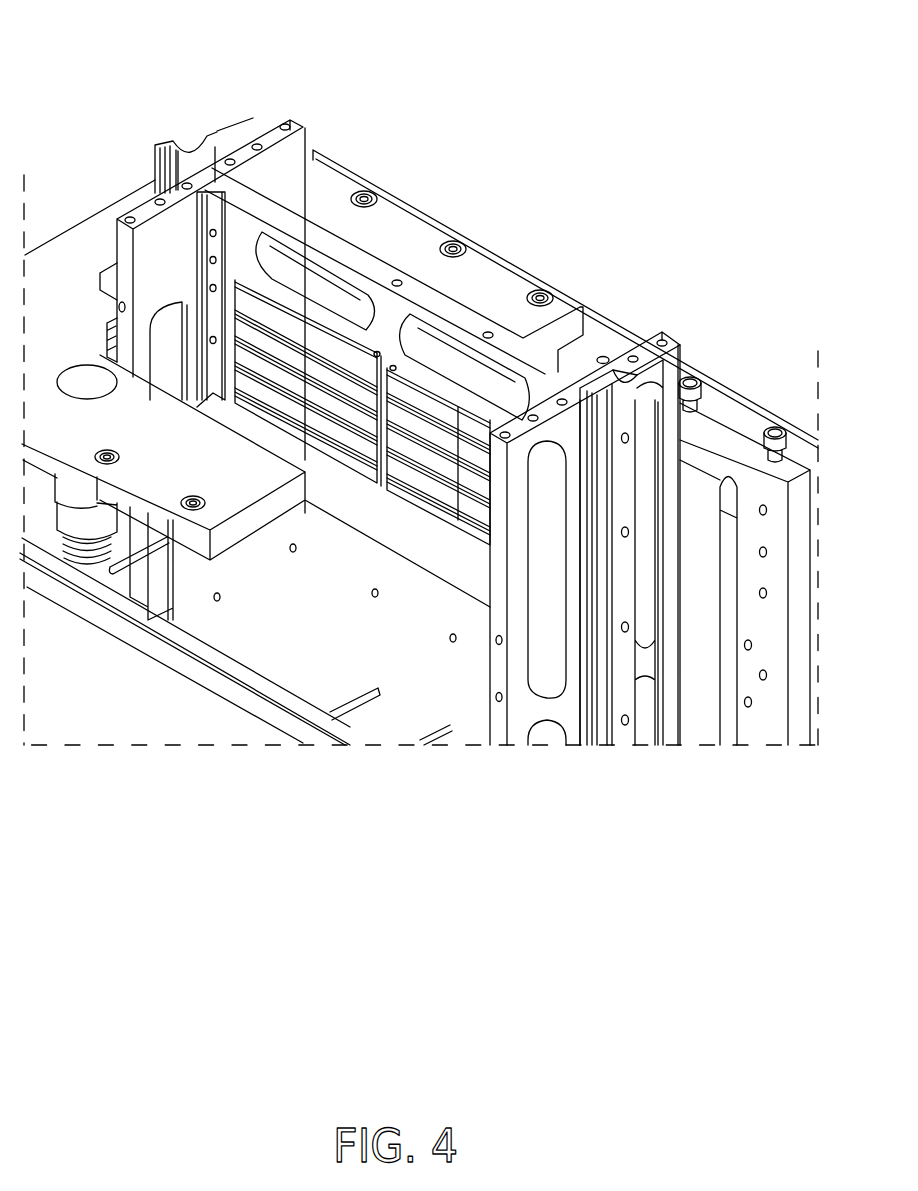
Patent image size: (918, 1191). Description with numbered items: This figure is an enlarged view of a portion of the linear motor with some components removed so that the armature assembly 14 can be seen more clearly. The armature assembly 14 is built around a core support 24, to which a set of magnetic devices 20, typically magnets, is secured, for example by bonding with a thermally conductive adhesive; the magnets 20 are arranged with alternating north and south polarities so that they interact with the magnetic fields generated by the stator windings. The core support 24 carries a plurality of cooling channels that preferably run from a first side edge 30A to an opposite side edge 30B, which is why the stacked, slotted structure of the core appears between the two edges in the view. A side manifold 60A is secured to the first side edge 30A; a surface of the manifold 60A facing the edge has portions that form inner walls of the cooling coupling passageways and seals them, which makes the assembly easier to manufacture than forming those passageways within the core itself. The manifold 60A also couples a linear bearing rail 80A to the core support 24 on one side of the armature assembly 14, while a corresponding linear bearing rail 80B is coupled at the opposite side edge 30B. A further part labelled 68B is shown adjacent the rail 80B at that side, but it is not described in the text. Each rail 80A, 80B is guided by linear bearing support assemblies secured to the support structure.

The armature assembly 14 is at (480, 303).
The magnetic devices 20 is at (435, 410).
The core support 24 is at (427, 298).
The first side edge 30A is at (605, 356).
The opposite side edge 30B is at (303, 133).
The side manifold 60A is at (650, 380).
The second support post 68B is at (290, 118).
The linear bearing rail 80A is at (633, 413).
The linear bearing rail 80B is at (177, 141).